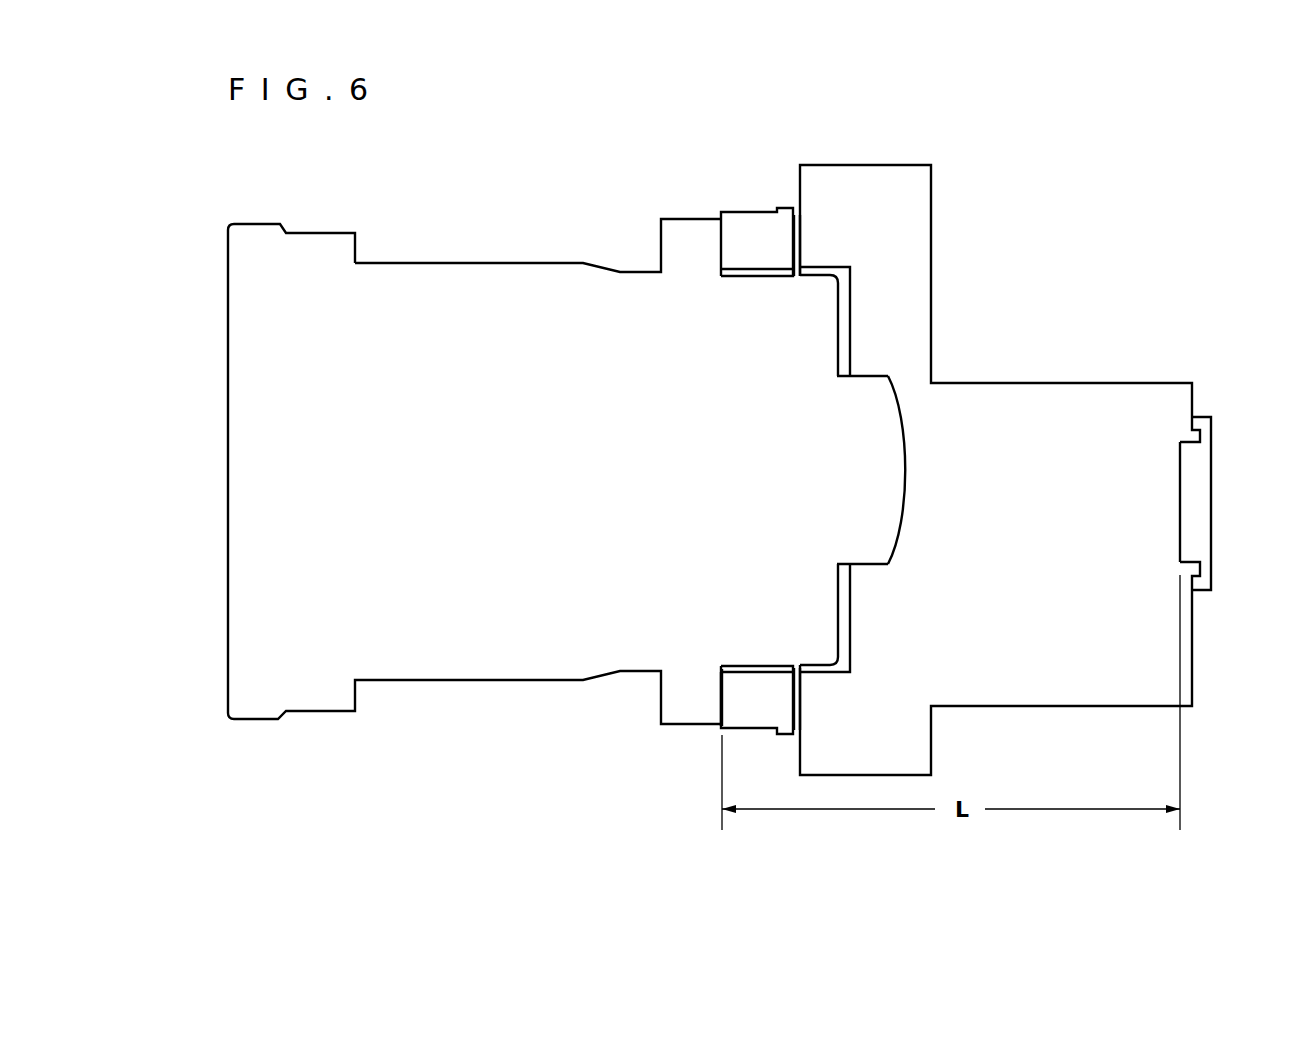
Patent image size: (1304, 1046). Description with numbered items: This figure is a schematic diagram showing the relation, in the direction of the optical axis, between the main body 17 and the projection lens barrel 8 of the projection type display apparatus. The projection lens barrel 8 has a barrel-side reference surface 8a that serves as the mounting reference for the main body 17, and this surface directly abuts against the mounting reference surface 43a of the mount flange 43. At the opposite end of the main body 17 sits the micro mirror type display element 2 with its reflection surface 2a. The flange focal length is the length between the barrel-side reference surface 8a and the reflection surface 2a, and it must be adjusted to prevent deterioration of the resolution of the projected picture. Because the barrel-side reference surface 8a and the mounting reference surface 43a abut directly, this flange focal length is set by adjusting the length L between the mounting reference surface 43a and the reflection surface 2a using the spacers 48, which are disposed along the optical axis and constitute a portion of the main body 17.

The projection lens barrel 8 is at (258, 222).
The barrel-side reference surface 8a is at (722, 694).
The mount flange 43 is at (745, 232).
The mounting reference surface 43a is at (722, 683).
The spacers 48 is at (797, 213).
The main body 17 is at (880, 165).
The micro mirror type display element 2 is at (1213, 486).
The reflection surface 2a is at (1178, 472).